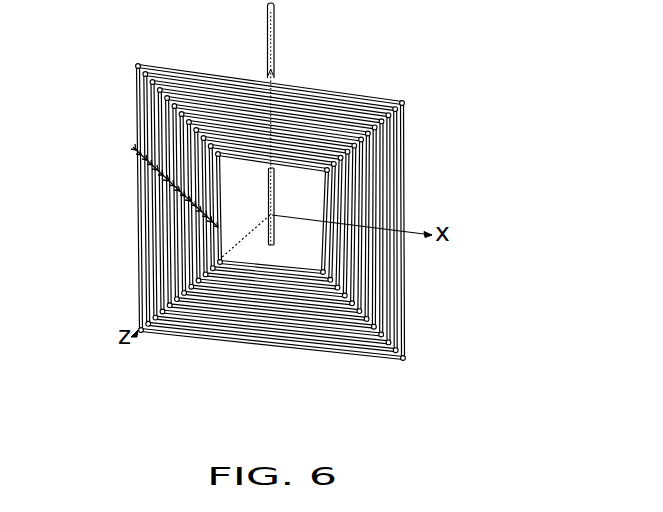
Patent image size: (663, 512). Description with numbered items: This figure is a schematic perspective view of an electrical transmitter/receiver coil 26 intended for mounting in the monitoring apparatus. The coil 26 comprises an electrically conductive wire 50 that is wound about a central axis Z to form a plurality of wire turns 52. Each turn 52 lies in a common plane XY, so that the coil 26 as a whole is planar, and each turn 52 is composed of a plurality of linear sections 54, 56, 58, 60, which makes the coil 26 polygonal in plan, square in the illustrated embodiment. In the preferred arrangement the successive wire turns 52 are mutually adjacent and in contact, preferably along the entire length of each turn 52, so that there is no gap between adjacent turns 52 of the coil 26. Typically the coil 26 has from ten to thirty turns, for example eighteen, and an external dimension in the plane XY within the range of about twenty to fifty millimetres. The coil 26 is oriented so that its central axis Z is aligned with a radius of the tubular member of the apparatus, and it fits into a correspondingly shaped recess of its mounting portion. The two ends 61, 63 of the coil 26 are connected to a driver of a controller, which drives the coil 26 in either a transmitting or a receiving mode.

The coil 26 is at (299, 204).
The electrically conductive wire 50 is at (192, 70).
The wire turns 52 is at (228, 88).
The linear section 54 is at (248, 132).
The linear section 56 is at (150, 217).
The linear section 58 is at (283, 300).
The linear section 60 is at (370, 277).
The end of the coil 61 is at (273, 33).
The end of the coil 63 is at (268, 250).